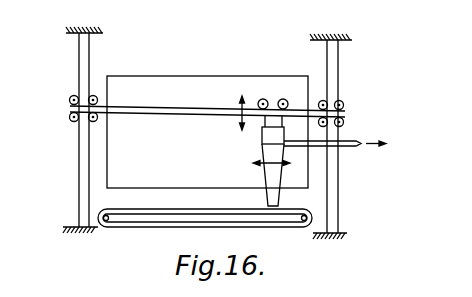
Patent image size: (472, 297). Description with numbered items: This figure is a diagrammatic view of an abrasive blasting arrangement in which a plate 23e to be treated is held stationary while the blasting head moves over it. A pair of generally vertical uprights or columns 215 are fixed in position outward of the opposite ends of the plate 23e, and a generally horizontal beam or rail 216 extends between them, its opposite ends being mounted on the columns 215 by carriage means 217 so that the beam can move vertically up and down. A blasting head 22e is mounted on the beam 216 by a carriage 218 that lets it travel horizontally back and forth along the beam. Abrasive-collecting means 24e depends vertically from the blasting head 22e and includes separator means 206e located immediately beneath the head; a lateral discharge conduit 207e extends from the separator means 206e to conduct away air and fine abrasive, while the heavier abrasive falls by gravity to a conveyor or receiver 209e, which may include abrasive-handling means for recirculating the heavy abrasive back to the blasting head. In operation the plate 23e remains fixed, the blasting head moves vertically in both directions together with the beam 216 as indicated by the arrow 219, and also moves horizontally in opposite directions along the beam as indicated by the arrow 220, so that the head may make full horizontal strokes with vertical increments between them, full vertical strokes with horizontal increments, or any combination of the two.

The uprights or columns 215 is at (83, 60).
The carriage means 217 is at (70, 100).
The beam or rail 216 is at (143, 103).
The plate 23e is at (255, 77).
The arrow 219 is at (240, 102).
The carriage 218 is at (286, 99).
The blasting head 22e is at (268, 122).
The arrow 220 is at (263, 166).
The abrasive-collecting means 24e is at (276, 178).
The separator means 206e is at (254, 163).
The lateral discharge conduit 207e is at (346, 142).
The conveyor or receiver 209e is at (270, 228).